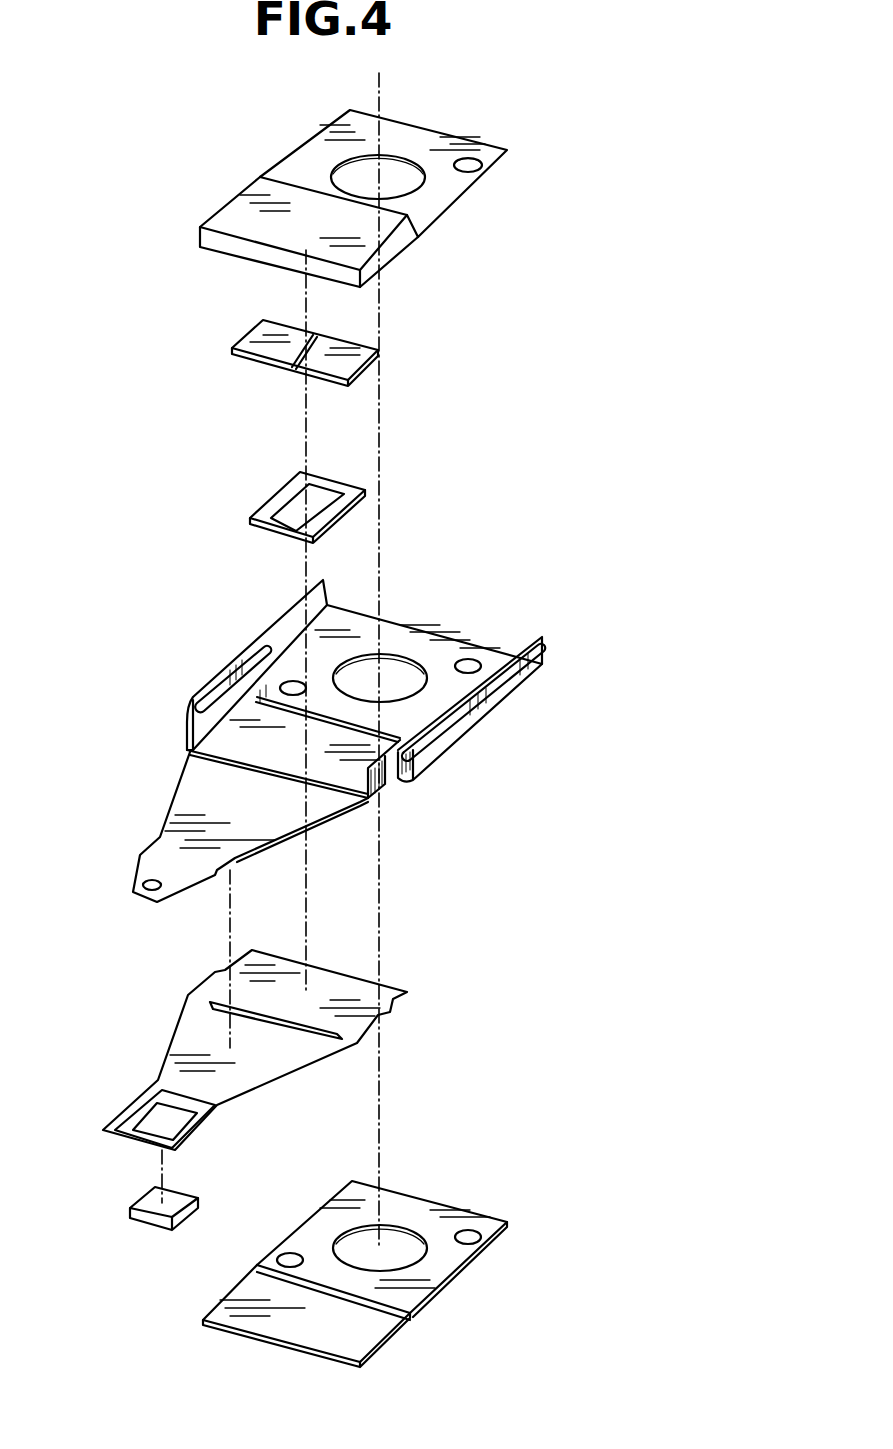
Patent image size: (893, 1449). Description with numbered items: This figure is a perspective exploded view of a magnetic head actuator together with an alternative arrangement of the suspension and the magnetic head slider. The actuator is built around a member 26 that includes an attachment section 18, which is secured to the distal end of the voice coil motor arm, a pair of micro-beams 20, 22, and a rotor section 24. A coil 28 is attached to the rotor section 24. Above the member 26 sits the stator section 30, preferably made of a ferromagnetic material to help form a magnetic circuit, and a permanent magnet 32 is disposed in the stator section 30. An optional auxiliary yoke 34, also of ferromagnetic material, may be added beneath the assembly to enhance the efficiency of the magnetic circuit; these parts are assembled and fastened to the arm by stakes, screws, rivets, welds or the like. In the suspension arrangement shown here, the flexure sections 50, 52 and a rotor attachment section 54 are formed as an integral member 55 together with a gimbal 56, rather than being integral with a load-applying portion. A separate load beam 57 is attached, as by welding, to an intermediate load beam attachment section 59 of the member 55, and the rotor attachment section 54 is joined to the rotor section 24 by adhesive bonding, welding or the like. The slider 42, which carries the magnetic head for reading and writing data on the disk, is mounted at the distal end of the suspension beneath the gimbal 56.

The attachment section 18 is at (407, 638).
The micro-beam 20 is at (413, 782).
The micro-beam 22 is at (192, 705).
The rotor section 24 is at (290, 747).
The member 26 is at (468, 622).
The coil 28 is at (268, 498).
The stator section 30 is at (300, 168).
The permanent magnet 32 is at (248, 338).
The auxiliary yoke 34 is at (478, 1213).
The slider 42 is at (142, 1228).
The flexure section 50 is at (278, 1058).
The flexure section 52 is at (360, 1048).
The rotor attachment section 54 is at (372, 998).
The integral member 55 is at (267, 1075).
The gimbal 56 is at (153, 1122).
The load beam 57 is at (213, 803).
The intermediate load beam attachment section 59 is at (223, 1045).